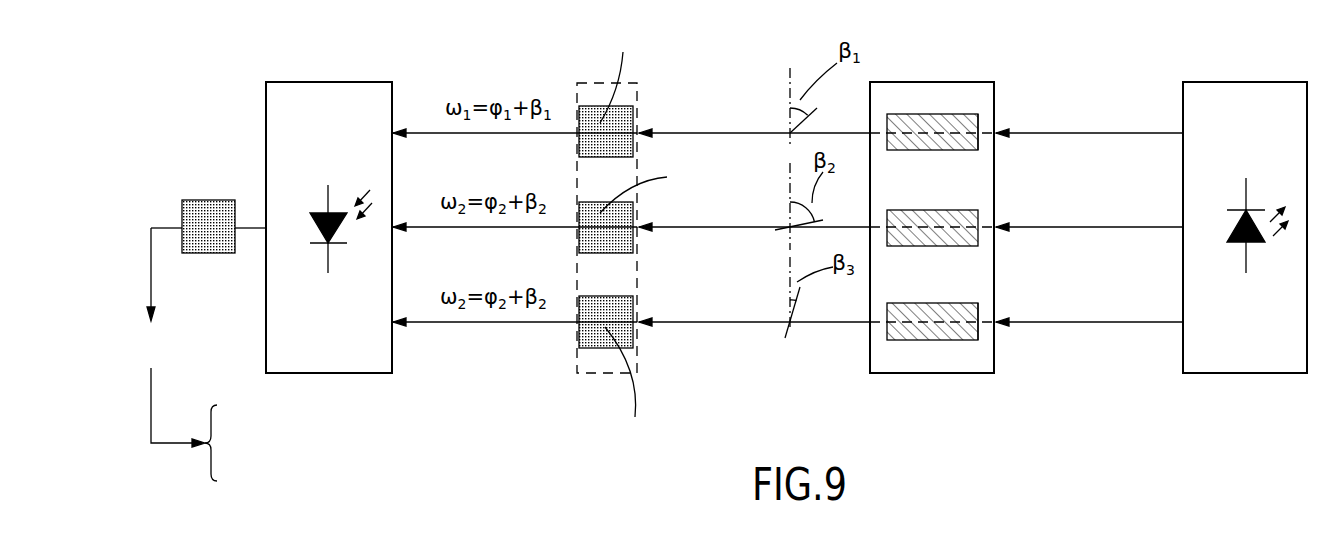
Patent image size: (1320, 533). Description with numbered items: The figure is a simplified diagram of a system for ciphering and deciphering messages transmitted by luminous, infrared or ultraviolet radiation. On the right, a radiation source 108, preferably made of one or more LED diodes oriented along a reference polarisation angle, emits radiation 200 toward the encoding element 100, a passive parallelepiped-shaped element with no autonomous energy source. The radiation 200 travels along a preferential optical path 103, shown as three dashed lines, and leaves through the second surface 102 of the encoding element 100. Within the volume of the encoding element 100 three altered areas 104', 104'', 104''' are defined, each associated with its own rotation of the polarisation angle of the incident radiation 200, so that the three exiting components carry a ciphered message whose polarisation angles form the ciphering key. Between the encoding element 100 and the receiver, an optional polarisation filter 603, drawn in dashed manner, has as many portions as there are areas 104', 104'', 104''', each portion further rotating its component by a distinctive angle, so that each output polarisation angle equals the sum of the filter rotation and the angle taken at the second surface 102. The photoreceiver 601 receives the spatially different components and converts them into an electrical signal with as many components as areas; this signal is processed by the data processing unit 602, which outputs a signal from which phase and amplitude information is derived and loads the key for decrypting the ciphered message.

The encoding element 100 is at (934, 255).
The second surface 102 is at (858, 377).
The preferential optical path 103 is at (995, 116).
The first area 104' is at (982, 147).
The second area 104'' is at (984, 243).
The third area 104''' is at (967, 373).
The radiation source 108 is at (1240, 325).
The radiation 200 is at (1100, 120).
The photoreceiver 601 is at (288, 142).
The data processing unit 602 is at (192, 215).
The polarisation filter 603 is at (583, 373).